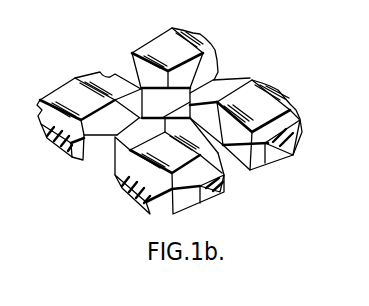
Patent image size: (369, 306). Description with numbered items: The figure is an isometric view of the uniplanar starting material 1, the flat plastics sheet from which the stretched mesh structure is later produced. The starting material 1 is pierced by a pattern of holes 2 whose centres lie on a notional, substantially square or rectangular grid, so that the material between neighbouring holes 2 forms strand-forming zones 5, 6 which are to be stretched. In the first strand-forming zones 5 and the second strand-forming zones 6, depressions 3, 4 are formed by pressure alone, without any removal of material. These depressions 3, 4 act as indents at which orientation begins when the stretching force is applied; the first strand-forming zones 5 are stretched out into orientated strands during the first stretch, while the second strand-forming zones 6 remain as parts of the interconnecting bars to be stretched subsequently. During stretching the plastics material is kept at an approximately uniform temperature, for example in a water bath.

The uniplanar starting material 1 is at (62, 84).
The holes 2 is at (154, 104).
The depression 3 is at (128, 66).
The depression 4 is at (231, 82).
The first strand-forming zone 5 is at (102, 73).
The second strand-forming zone 6 is at (200, 75).